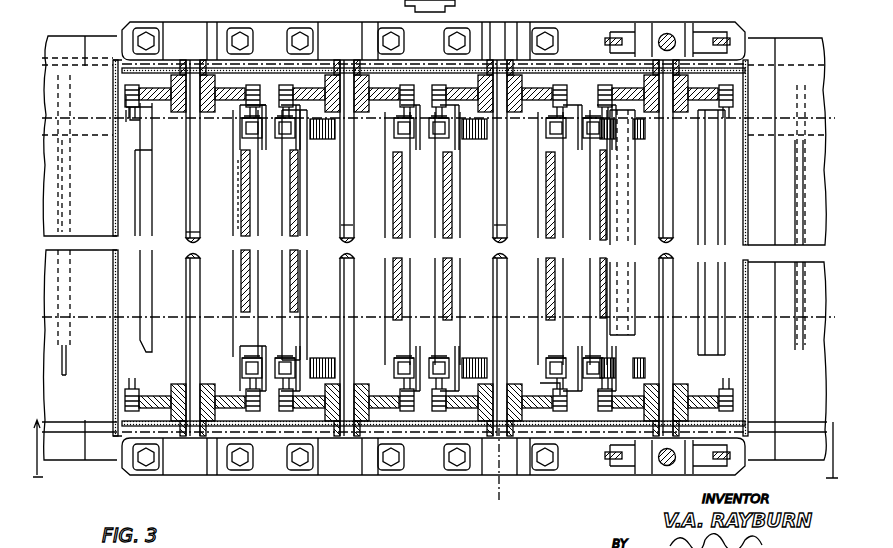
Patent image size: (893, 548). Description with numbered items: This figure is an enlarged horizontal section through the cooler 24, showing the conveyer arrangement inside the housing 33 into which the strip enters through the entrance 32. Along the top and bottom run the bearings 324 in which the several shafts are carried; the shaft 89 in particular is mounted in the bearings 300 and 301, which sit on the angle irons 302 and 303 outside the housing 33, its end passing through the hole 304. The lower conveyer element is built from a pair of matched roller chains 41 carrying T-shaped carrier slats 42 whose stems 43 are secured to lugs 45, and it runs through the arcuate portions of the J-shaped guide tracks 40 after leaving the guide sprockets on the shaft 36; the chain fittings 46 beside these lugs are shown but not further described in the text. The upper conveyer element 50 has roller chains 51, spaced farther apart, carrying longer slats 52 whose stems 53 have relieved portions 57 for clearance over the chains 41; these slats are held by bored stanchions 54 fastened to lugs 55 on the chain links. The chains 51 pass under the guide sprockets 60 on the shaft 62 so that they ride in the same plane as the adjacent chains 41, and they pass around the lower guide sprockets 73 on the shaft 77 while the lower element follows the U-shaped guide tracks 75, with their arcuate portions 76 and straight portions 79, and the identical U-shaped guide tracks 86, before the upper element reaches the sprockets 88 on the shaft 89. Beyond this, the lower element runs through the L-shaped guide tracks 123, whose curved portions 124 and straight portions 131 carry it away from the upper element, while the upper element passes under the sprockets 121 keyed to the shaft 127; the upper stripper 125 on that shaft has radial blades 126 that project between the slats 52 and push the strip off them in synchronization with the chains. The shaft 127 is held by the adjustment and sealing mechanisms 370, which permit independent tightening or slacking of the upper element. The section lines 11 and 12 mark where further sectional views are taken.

The section line 11 is at (498, 492).
The section line 12 is at (272, 150).
The cooler 24 is at (76, 466).
The entrance 32 is at (57, 166).
The housing 33 is at (113, 84).
The shaft 36 is at (213, 132).
The guide tracks 40 is at (270, 105).
The roller chains 41 is at (248, 143).
The carrier slats 42 is at (810, 158).
The stems 43 is at (292, 272).
The lugs 45 is at (291, 152).
The nut 46 is at (292, 136).
The upper conveyer element 50 is at (140, 184).
The roller chains 51 is at (125, 99).
The carrier slats 52 is at (148, 203).
The stems 53 is at (240, 189).
The bored stanchions 54 is at (137, 108).
The lugs 55 is at (140, 108).
The relieved portions 57 is at (240, 331).
The guide sprockets 60 is at (172, 98).
The shaft 62 is at (197, 234).
The lower guide sprockets 73 is at (320, 92).
The U-shaped guide tracks 75 is at (272, 112).
The arcuate portions 76 is at (384, 136).
The shaft 77 is at (378, 217).
The straight portions 79 is at (397, 143).
The U-shaped guide tracks 86 is at (456, 144).
The sprockets 88 is at (455, 90).
The shaft 89 is at (497, 212).
The sprockets 121 is at (622, 90).
The guide tracks 123 is at (599, 388).
The curved portions 124 is at (612, 172).
The upper stripper 125 is at (605, 146).
The blades 126 is at (698, 272).
The shaft 127 is at (675, 242).
The straight portions 131 is at (740, 119).
The bearing 300 is at (492, 467).
The bearing 301 is at (516, 14).
The angle iron 302 is at (593, 470).
The angle iron 303 is at (590, 28).
The hole 304 is at (548, 426).
The bearings 324 is at (347, 29).
The adjustment and sealing mechanisms 370 is at (704, 14).